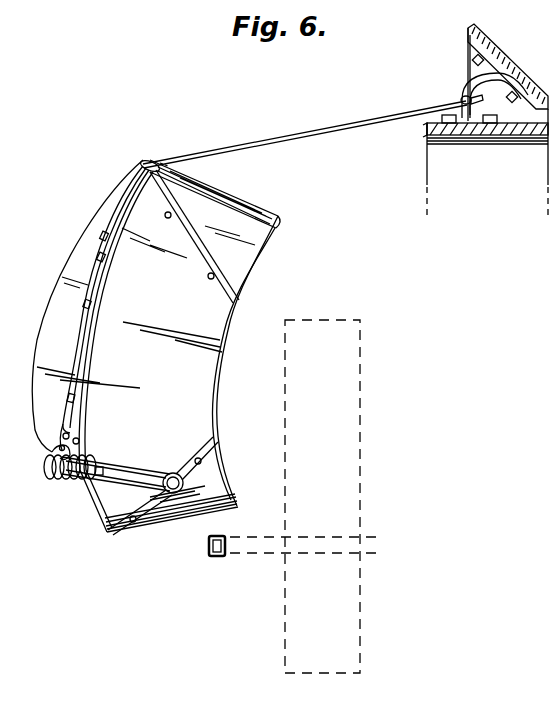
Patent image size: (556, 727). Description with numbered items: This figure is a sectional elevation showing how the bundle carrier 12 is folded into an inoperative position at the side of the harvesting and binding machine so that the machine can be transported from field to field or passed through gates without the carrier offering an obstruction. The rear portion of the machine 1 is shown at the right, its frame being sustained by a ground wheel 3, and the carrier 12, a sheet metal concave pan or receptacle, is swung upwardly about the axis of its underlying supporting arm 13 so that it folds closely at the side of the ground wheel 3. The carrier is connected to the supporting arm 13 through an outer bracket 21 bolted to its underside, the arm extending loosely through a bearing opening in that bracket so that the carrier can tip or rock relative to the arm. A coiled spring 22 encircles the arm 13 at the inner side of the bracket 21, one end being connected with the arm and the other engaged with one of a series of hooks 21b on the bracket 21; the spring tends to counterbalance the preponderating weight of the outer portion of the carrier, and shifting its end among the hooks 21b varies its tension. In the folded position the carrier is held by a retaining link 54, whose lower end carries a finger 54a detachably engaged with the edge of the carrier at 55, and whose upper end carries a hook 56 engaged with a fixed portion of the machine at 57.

The rear portion of harvesting and binding machine 1 is at (485, 135).
The ground wheel 3 is at (348, 422).
The bundle carrier 12 is at (156, 333).
The supporting arm 13 is at (128, 468).
The outer bracket 21 is at (55, 445).
The hooks 21b is at (70, 442).
The coiled spring 22 is at (68, 480).
The retaining link 54 is at (342, 128).
The finger 54a is at (168, 166).
The carrier edge engagement point 55 is at (146, 161).
The hook 56 is at (462, 97).
The fixed portion of the machine 57 is at (480, 82).